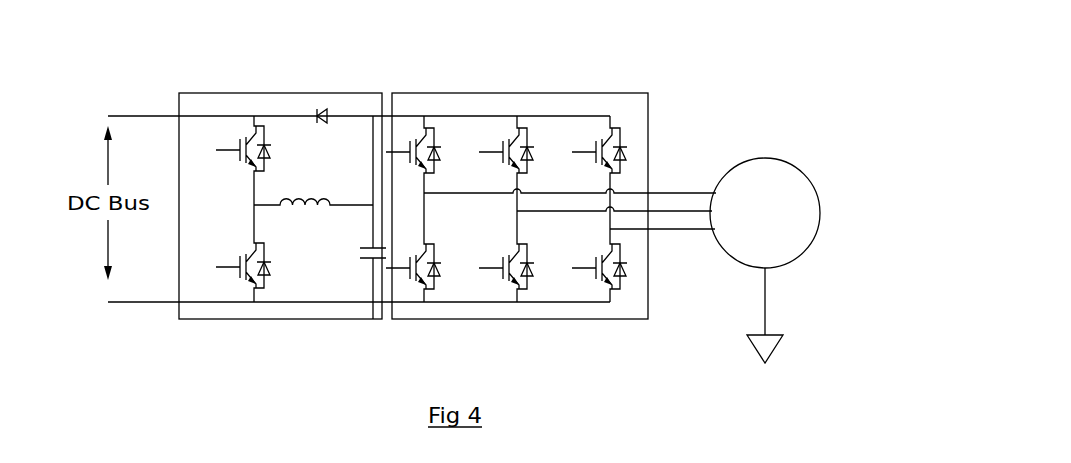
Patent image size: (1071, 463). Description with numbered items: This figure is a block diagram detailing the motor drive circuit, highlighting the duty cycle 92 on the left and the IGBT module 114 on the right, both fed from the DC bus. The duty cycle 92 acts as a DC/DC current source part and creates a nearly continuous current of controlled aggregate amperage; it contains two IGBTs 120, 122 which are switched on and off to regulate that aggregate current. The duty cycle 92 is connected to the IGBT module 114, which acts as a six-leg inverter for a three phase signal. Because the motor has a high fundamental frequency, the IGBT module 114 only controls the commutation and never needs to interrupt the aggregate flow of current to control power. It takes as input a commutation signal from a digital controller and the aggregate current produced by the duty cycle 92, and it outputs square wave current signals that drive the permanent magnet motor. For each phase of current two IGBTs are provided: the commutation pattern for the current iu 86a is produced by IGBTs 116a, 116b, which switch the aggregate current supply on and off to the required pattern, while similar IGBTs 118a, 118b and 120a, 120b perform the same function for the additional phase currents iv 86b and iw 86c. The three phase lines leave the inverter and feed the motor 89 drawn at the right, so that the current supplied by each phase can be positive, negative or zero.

The duty cycle 92 is at (282, 203).
The IGBT module 114 is at (543, 189).
The IGBT 120 is at (268, 163).
The IGBT 122 is at (267, 253).
The IGBT 116a is at (433, 132).
The IGBT 116b is at (435, 256).
The IGBT 118a is at (530, 137).
The IGBT 118b is at (530, 257).
The IGBT 120a is at (624, 133).
The IGBT 120b is at (627, 253).
The phase current iu 86a is at (667, 193).
The phase current iv 86b is at (706, 211).
The phase current iw 86c is at (703, 230).
The motor 89 is at (767, 158).